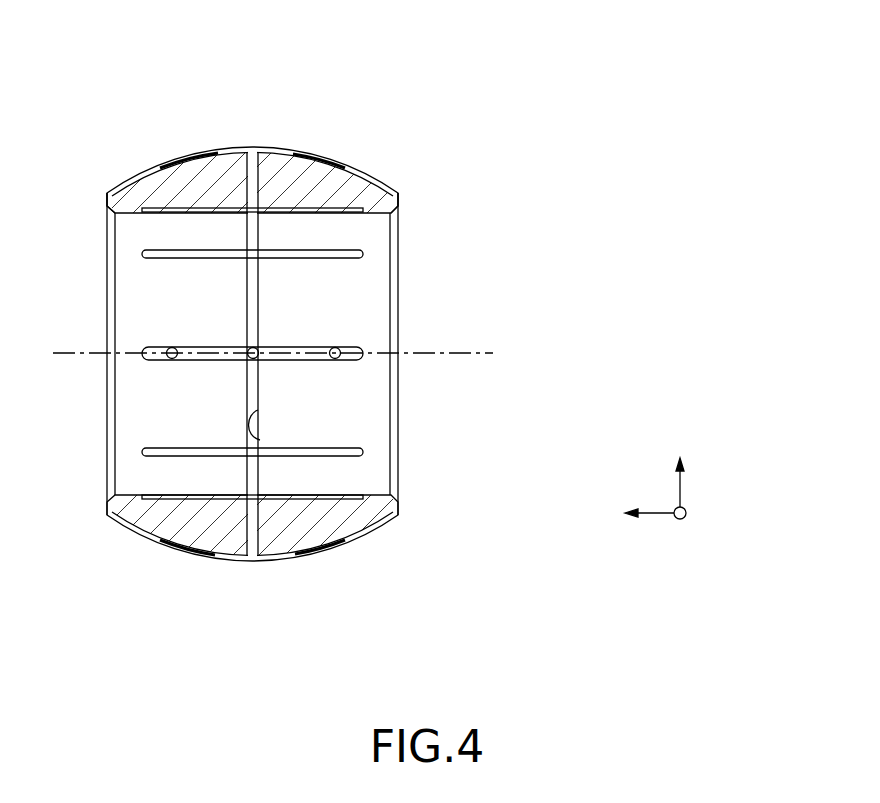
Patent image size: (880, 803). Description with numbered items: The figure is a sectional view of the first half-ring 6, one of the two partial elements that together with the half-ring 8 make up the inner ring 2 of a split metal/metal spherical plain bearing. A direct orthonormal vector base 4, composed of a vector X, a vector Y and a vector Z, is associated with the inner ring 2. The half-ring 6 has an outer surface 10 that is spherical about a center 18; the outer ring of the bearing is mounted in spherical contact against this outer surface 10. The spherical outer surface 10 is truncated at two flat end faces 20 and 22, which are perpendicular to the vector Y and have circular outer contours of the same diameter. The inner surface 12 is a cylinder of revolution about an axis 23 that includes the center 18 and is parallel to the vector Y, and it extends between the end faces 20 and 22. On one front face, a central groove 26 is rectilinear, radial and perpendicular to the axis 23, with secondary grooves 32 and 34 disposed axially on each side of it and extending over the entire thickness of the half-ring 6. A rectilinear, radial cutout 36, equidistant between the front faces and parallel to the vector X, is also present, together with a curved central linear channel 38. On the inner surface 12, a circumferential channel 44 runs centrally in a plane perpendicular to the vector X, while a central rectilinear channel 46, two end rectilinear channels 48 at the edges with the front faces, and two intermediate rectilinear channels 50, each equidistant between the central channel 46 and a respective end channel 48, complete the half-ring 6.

The inner ring 2 is at (448, 102).
The direct orthonormal vector base 4 is at (725, 465).
The half-ring 6 is at (172, 550).
The half-ring 8 is at (175, 157).
The outer surface 10 is at (383, 178).
The inner surface 12 is at (137, 285).
The center 18 is at (253, 360).
The end face 20 is at (102, 203).
The end face 22 is at (398, 197).
The axis 23 is at (482, 355).
The central groove 26 is at (252, 347).
The secondary groove 32 is at (172, 360).
The secondary groove 34 is at (332, 347).
The cutout 36 is at (250, 156).
The central linear channel 38 is at (293, 148).
The channel 44 is at (262, 440).
The central rectilinear channel 46 is at (213, 210).
The end rectilinear channel 48 is at (197, 342).
The intermediate rectilinear channel 50 is at (345, 247).